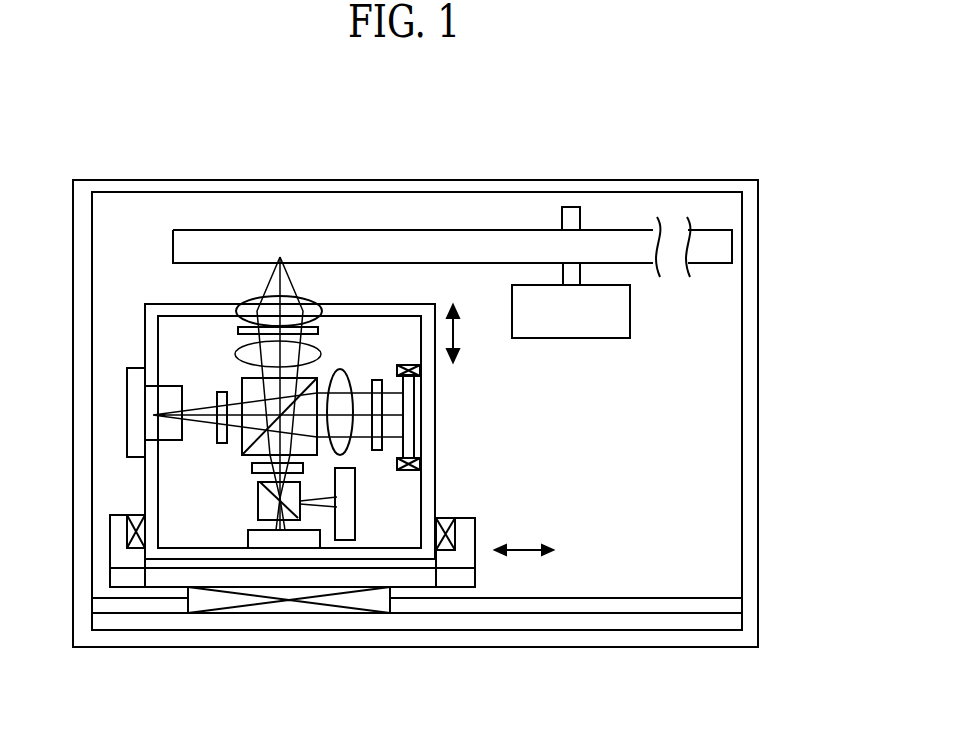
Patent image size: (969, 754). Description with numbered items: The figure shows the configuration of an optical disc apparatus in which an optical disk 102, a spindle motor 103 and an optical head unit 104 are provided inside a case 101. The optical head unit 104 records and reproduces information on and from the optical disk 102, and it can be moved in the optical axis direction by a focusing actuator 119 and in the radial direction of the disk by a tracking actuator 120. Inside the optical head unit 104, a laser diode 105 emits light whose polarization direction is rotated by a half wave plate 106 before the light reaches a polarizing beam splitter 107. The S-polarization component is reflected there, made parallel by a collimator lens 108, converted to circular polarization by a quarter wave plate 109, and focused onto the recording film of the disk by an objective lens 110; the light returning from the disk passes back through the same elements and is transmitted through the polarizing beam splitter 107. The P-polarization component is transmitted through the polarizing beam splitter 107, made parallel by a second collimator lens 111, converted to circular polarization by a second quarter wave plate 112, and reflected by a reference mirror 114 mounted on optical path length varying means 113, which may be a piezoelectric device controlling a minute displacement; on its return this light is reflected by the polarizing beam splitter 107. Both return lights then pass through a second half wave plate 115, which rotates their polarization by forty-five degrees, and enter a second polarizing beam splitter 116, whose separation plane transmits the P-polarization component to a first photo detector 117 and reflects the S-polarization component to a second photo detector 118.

The case 101 is at (160, 180).
The optical disk 102 is at (435, 230).
The spindle motor 103 is at (625, 308).
The optical head unit 104 is at (436, 394).
The laser diode 105 is at (127, 430).
The half wave plate 106 is at (217, 395).
The polarizing beam splitter 107 is at (242, 447).
The collimator lens 108 is at (320, 328).
The quarter wave plate 109 is at (175, 318).
The objective lens 110 is at (255, 298).
The second collimator lens 111 is at (348, 378).
The second quarter wave plate 112 is at (380, 380).
The optical path length varying means 113 is at (415, 470).
The reference mirror 114 is at (409, 430).
The second half wave plate 115 is at (252, 468).
The second polarizing beam splitter 116 is at (258, 502).
The first photo detector 117 is at (248, 538).
The second photo detector 118 is at (355, 498).
The focusing actuator 119 is at (443, 553).
The tracking actuator 120 is at (292, 610).